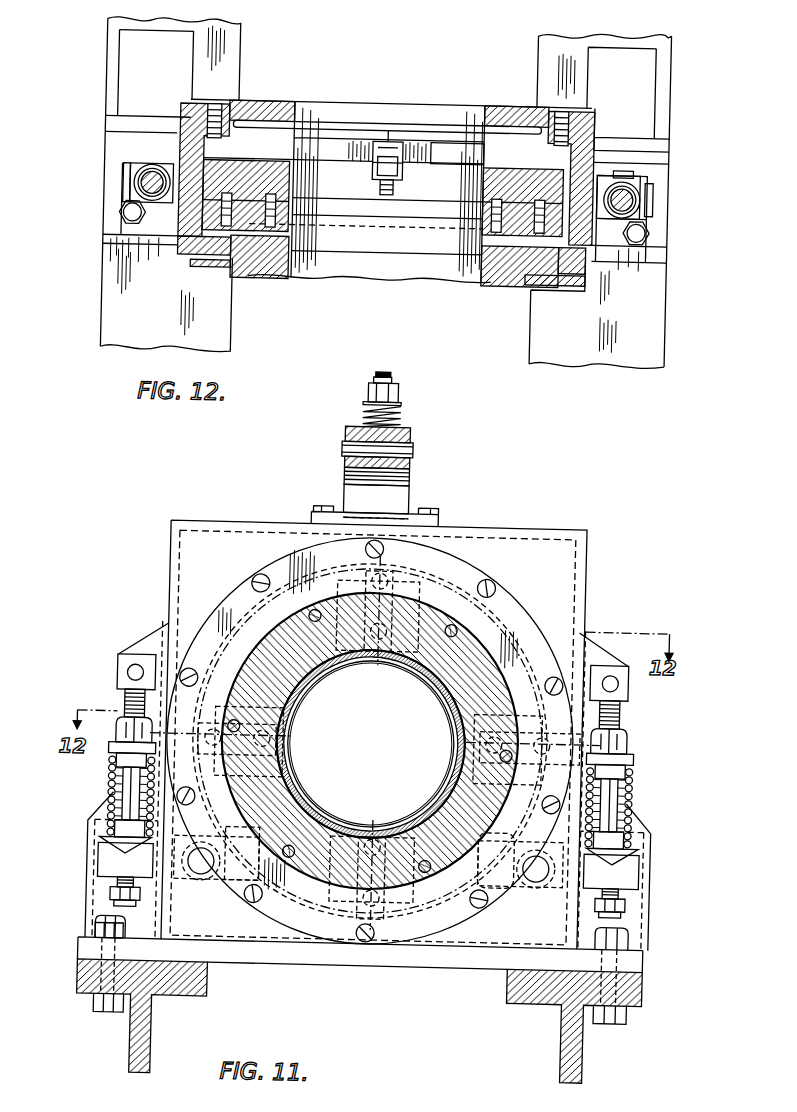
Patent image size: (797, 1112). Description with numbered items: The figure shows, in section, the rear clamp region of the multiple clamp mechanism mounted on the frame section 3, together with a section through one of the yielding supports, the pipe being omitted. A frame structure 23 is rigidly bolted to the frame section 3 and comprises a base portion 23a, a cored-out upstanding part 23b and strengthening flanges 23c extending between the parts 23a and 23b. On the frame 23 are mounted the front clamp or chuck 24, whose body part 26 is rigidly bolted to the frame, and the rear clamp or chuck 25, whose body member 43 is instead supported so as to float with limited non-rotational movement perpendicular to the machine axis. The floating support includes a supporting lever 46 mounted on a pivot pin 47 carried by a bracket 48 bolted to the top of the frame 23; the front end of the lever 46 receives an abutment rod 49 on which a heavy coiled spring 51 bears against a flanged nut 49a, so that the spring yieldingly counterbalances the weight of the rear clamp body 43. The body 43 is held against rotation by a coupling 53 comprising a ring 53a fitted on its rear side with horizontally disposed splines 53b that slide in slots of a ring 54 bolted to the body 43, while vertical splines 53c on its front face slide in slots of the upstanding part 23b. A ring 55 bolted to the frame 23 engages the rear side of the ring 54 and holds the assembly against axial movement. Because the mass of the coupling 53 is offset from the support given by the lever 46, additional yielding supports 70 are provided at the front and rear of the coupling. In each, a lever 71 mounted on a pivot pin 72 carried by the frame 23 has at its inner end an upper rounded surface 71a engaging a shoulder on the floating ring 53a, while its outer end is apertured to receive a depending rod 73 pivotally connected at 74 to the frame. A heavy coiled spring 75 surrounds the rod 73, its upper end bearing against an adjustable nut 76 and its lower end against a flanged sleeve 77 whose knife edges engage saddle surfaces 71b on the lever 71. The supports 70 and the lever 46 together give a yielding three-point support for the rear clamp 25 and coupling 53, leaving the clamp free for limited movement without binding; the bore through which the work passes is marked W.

In FIG. 12, the frame section 3 is at (100, 321).
In FIG. 11, the frame section 3 is at (145, 1050).
In FIG. 12, the frame structure 23 is at (99, 147).
In FIG. 11, the frame structure 23 is at (592, 532).
In FIG. 12, the base portion 23a is at (136, 82).
In FIG. 11, the base portion 23a is at (284, 960).
In FIG. 12, the cored-out upstanding part 23b is at (179, 152).
In FIG. 11, the cored-out upstanding part 23b is at (536, 537).
In FIG. 12, the strengthening flanges 23c is at (112, 54).
In FIG. 11, the strengthening flanges 23c is at (99, 920).
In FIG. 12, the front clamp or chuck 24 is at (497, 90).
In FIG. 12, the rear clamp or chuck 25 is at (483, 291).
In FIG. 11, the rear clamp or chuck 25 is at (263, 615).
In FIG. 12, the body part 26 is at (274, 111).
In FIG. 12, the body member 43 is at (370, 271).
In FIG. 11, the body member 43 is at (406, 934).
In FIG. 11, the supporting lever 46 is at (338, 434).
In FIG. 11, the pivot pin 47 is at (406, 449).
In FIG. 11, the bracket 48 is at (397, 432).
In FIG. 11, the abutment rod 49 is at (377, 373).
In FIG. 11, the flanged nut 49a is at (362, 390).
In FIG. 11, the coiled spring 51 is at (393, 411).
In FIG. 12, the coupling 53 is at (416, 197).
In FIG. 12, the ring 53a is at (360, 198).
In FIG. 11, the ring 53a is at (523, 603).
In FIG. 12, the horizontally disposed splines 53b is at (257, 284).
In FIG. 11, the horizontally disposed splines 53b is at (228, 690).
In FIG. 12, the vertical splines 53c is at (405, 176).
In FIG. 11, the vertical splines 53c is at (420, 588).
In FIG. 12, the ring 54 is at (287, 283).
In FIG. 12, the ring 55 is at (182, 262).
In FIG. 11, the ring 55 is at (280, 566).
In FIG. 12, the yielding supports 70 is at (117, 206).
In FIG. 11, the yielding supports 70 is at (67, 790).
In FIG. 12, the lever 71 is at (120, 190).
In FIG. 11, the lever 71 is at (110, 876).
In FIG. 11, the upper rounded surface 71a is at (226, 886).
In FIG. 11, the saddle surfaces 71b is at (103, 863).
In FIG. 11, the pivot pin 72 is at (203, 866).
In FIG. 12, the depending rod 73 is at (145, 176).
In FIG. 11, the depending rod 73 is at (124, 708).
In FIG. 12, the pivotal connection 74 is at (633, 171).
In FIG. 11, the pivotal connection 74 is at (126, 678).
In FIG. 11, the coiled spring 75 is at (113, 791).
In FIG. 12, the nut 76 is at (123, 186).
In FIG. 11, the nut 76 is at (116, 733).
In FIG. 12, the flanged sleeve 77 is at (130, 198).
In FIG. 11, the flanged sleeve 77 is at (103, 846).
In FIG. 11, the wedge ring W is at (297, 703).